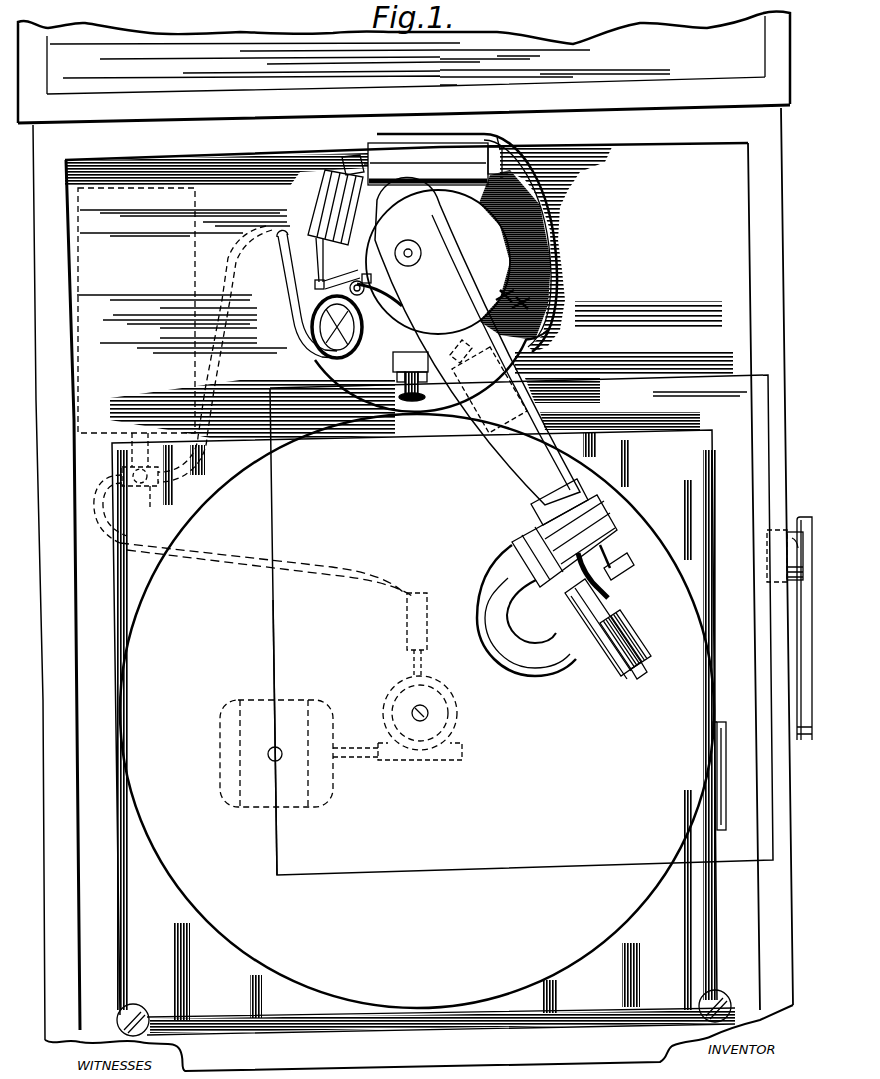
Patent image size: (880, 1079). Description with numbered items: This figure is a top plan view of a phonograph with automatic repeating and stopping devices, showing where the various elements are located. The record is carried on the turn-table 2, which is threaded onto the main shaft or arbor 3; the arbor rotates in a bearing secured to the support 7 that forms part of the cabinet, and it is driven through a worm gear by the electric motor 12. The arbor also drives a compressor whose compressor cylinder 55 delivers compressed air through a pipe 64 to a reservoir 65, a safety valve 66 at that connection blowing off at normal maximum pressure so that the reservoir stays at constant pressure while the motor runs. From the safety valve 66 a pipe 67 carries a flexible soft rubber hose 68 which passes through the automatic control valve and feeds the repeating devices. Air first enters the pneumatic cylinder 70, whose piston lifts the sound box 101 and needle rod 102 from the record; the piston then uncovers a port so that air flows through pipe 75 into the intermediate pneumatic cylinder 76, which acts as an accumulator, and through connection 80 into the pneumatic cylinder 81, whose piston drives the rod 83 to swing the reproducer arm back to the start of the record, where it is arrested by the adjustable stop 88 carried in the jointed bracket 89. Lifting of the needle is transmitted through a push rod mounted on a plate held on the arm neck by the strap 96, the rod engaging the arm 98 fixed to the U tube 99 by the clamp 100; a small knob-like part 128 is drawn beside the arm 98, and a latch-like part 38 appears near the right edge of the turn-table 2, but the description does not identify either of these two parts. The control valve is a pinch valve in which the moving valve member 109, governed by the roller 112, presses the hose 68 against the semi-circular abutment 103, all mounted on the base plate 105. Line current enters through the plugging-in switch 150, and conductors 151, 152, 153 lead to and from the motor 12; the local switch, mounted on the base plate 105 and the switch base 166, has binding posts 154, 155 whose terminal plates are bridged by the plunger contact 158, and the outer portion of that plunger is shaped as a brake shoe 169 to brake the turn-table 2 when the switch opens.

The turn-table 2 is at (417, 711).
The main shaft or arbor 3 is at (428, 718).
The support 7 is at (405, 541).
The electric motor 12 is at (312, 803).
The latch bar 38 is at (757, 797).
The compressor cylinder 55 is at (400, 627).
The pipe 64 is at (340, 565).
The reservoir 65 is at (97, 436).
The safety valve 66 is at (146, 478).
The pipe 67 is at (210, 447).
The flexible soft rubber hose 68 is at (286, 318).
The pneumatic cylinder 70 is at (507, 455).
The pipe 75 is at (556, 247).
The intermediate pneumatic cylinder 76 is at (435, 164).
The connection 80 is at (362, 158).
The pneumatic cylinder 81 is at (318, 200).
The rod 83 is at (314, 243).
The adjustable stop 88 is at (545, 336).
The jointed bracket 89 is at (532, 302).
The strap 96 is at (540, 511).
The arm 98 is at (610, 590).
The U tube 99 is at (484, 636).
The clamp 100 is at (515, 545).
The sound box 101 is at (612, 672).
The needle rod 102 is at (636, 652).
The semi-circular abutment 103 is at (337, 327).
The base plate 105 is at (458, 255).
The moving valve member 109 is at (362, 296).
The roller 112 is at (385, 291).
The knob 128 is at (632, 566).
The plugging-in switch 150 is at (795, 541).
The conductor 151 is at (536, 868).
The conductor 152 is at (736, 375).
The conductor 153 is at (275, 612).
The binding post 154 is at (497, 417).
The binding post 155 is at (383, 380).
The plunger contact 158 is at (405, 405).
The switch base 166 is at (393, 358).
The brake shoe 169 is at (418, 410).